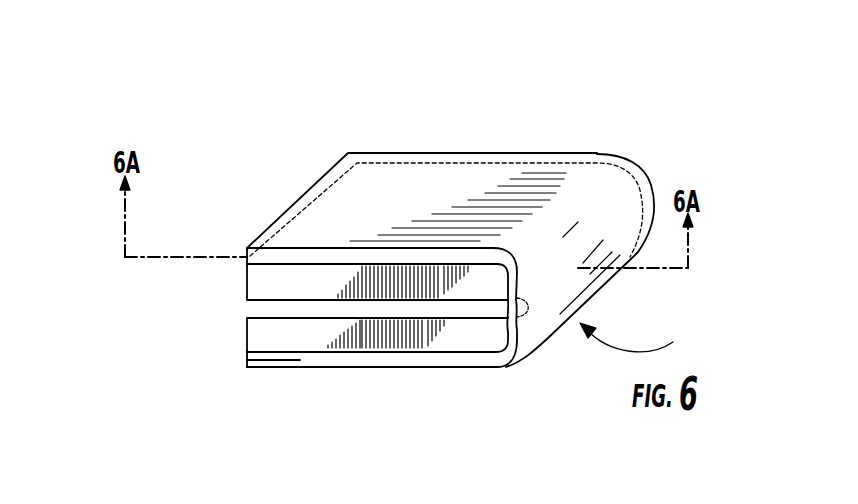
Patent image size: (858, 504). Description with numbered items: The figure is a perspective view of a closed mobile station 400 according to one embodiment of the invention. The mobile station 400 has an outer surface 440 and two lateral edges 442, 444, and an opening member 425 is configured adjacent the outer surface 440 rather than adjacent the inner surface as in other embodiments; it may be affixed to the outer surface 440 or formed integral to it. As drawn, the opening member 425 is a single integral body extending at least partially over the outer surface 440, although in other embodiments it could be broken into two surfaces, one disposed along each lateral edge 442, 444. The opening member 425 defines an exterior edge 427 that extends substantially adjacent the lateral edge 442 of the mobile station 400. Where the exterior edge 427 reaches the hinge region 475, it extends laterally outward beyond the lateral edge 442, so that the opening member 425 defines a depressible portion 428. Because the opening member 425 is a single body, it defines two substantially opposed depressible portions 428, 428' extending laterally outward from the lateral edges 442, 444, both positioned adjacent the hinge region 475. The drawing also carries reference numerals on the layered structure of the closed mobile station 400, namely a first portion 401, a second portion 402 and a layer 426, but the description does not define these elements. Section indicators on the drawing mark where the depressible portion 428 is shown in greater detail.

The folded laminate assembly 400 is at (472, 124).
The first panel 401 is at (265, 280).
The second panel 402 is at (258, 333).
The adhesive layer 425 is at (300, 360).
The substrate layer 426 is at (278, 355).
The bottom layer 427 is at (348, 370).
The fold 428 is at (406, 353).
The fold edge 428' is at (642, 233).
The top layer 440 is at (362, 197).
The inner layer 442 is at (433, 330).
The hidden edge of top layer 444 is at (505, 160).
The direction arrow 475 is at (643, 339).